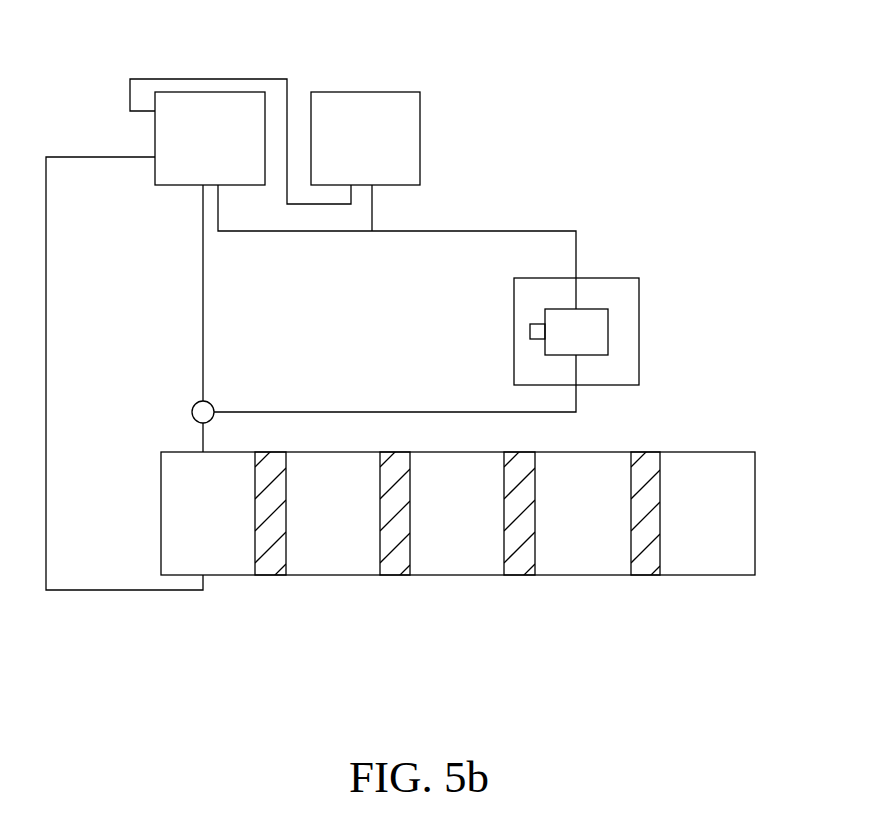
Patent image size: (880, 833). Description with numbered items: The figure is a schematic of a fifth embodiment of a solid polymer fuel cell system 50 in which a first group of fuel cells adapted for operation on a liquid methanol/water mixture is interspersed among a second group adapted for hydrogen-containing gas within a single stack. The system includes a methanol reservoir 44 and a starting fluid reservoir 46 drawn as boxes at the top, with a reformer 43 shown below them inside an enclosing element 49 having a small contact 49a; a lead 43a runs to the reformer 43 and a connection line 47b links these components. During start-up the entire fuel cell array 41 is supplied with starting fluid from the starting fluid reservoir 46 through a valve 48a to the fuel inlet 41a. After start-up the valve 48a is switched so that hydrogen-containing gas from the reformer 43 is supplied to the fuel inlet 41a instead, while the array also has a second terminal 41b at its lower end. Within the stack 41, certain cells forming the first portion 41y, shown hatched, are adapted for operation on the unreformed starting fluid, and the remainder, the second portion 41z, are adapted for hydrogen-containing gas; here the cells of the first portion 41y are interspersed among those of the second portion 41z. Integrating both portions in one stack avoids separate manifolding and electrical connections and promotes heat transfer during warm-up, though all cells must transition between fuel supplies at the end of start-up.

The fuel cell system 50 is at (746, 82).
The starting fluid reservoir 46 is at (235, 100).
The methanol reservoir 44 is at (395, 100).
The connection line 47b is at (376, 227).
The holder 49 is at (518, 292).
The holder contact 49a is at (527, 332).
The reformer 43 is at (597, 332).
The transducer lead 43a is at (577, 302).
The valve 48a is at (193, 403).
The fuel inlet 41a is at (195, 447).
The fuel cell array 41 is at (170, 490).
The first portion 41y is at (393, 518).
The second portion 41z is at (447, 563).
The second electrode terminal 41b is at (197, 575).